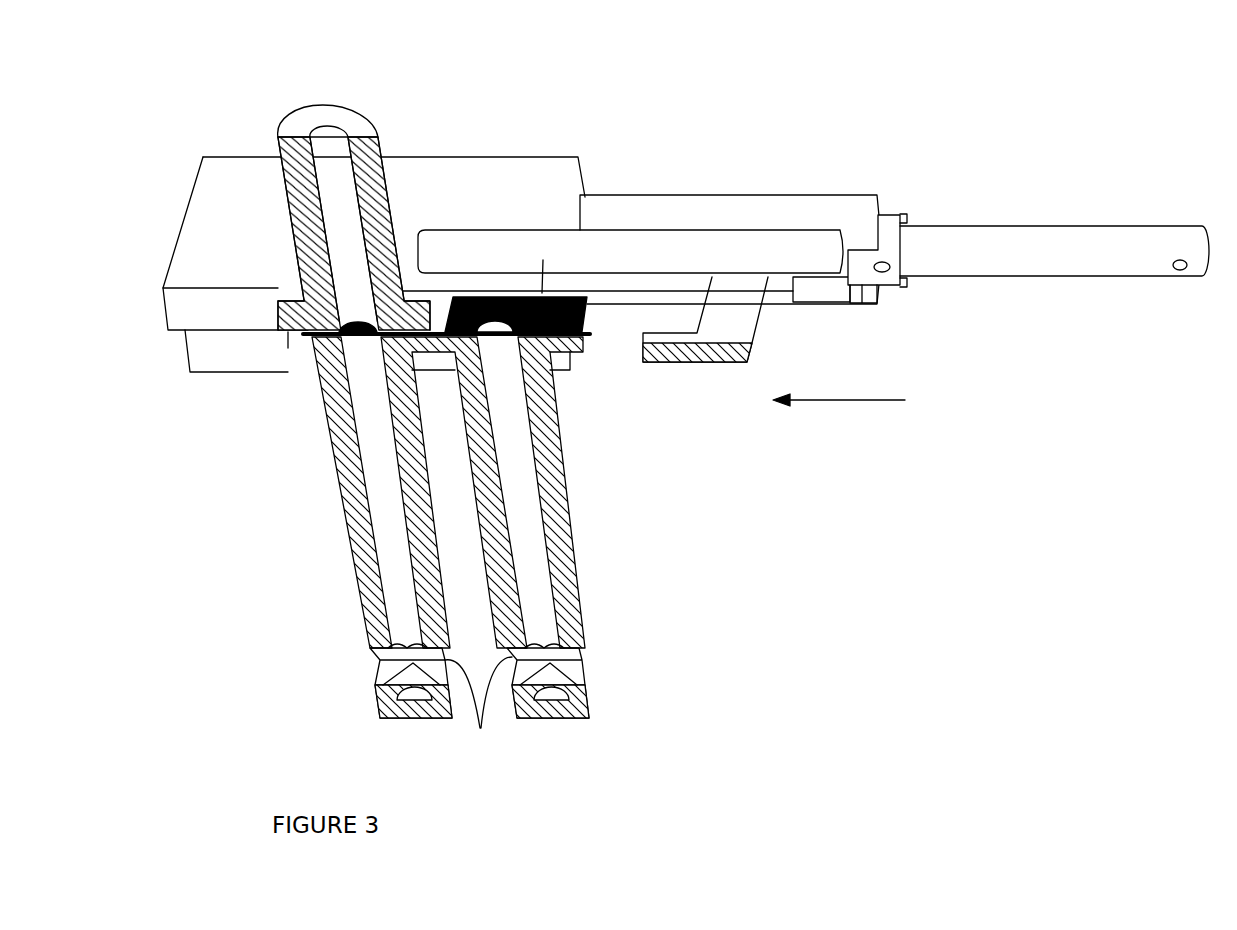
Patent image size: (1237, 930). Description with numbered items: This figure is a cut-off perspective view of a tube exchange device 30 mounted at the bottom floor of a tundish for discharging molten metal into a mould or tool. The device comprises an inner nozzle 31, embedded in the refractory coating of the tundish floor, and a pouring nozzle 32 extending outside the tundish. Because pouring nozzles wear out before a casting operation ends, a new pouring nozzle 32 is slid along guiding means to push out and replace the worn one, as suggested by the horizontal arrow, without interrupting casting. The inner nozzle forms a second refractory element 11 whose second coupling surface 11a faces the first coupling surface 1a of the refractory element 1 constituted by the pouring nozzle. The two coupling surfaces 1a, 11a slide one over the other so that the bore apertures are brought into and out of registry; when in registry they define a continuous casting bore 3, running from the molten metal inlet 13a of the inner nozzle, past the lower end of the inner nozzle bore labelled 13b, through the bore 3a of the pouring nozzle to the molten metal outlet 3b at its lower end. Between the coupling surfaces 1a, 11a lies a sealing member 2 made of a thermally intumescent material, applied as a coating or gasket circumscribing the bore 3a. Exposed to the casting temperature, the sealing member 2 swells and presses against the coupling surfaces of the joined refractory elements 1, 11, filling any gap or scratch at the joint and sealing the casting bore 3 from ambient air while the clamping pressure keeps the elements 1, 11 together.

The tube exchange device 30 is at (168, 110).
The inner nozzle 31 is at (357, 117).
The molten metal inlet 13a is at (338, 160).
The bore bottom 13b is at (358, 310).
The second refractory element 11 is at (283, 203).
The second coupling surface 11a is at (288, 348).
The sealing member 2 is at (583, 297).
The bore 3a is at (489, 322).
The first coupling surface 1a is at (585, 299).
The casting bore 3 is at (493, 390).
The refractory element 1 is at (330, 490).
The pouring nozzle 32 is at (348, 540).
The molten metal outlet 3b is at (478, 709).